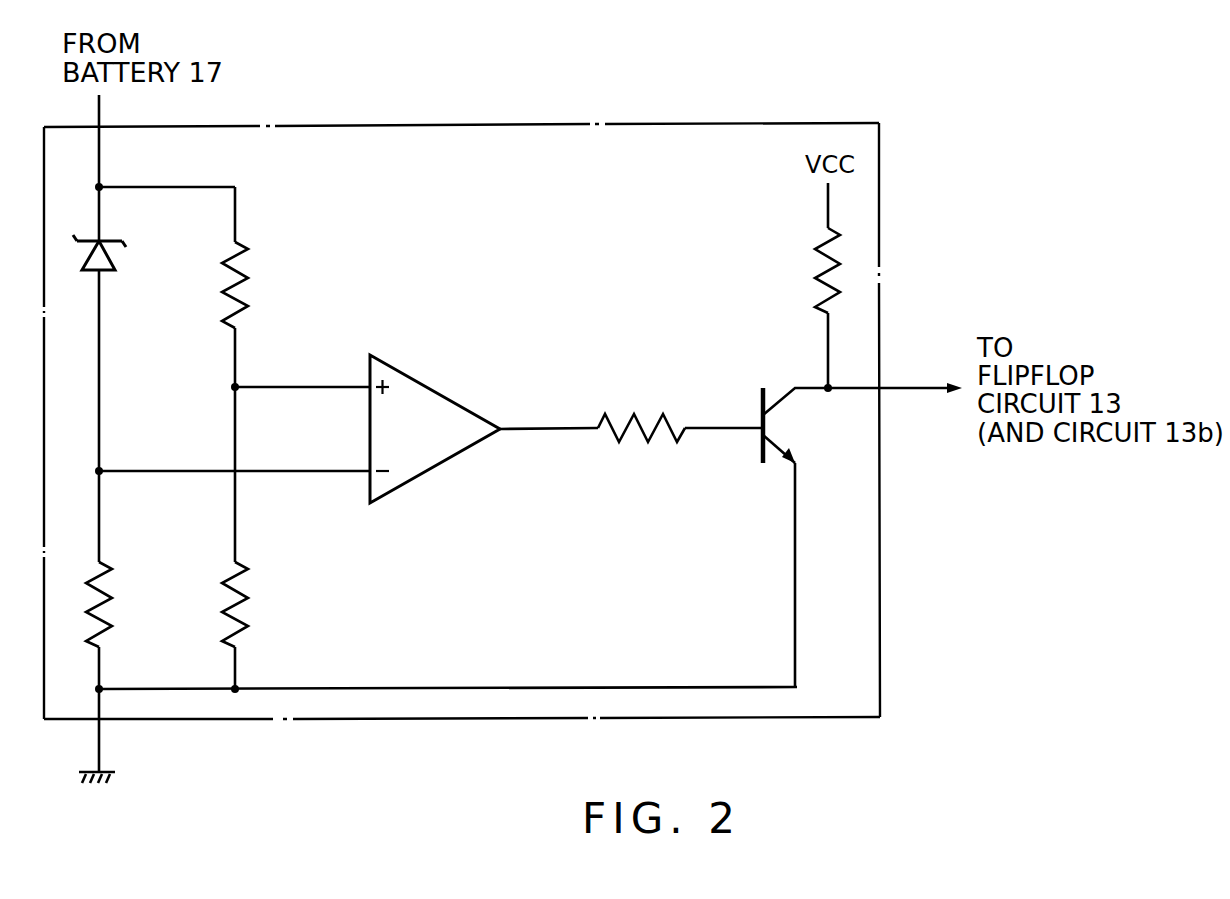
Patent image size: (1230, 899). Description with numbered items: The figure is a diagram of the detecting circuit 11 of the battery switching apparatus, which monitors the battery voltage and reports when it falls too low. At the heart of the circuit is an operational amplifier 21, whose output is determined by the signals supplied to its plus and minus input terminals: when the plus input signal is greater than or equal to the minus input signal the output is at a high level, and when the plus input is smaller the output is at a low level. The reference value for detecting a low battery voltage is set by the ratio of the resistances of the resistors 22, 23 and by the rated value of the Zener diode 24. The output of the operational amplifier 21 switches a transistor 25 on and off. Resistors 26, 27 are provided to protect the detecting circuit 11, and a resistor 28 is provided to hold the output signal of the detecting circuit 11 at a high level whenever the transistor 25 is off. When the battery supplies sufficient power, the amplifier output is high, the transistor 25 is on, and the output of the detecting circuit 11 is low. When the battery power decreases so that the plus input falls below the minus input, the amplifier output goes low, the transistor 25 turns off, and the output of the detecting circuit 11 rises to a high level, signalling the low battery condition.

The detecting circuit 11 is at (881, 331).
The operational amplifier 21 is at (440, 392).
The resistor 22 is at (250, 265).
The resistor 23 is at (250, 607).
The Zener diode 24 is at (117, 262).
The transistor 25 is at (757, 448).
The resistor 26 is at (112, 607).
The resistor 27 is at (645, 412).
The resistor 28 is at (814, 267).